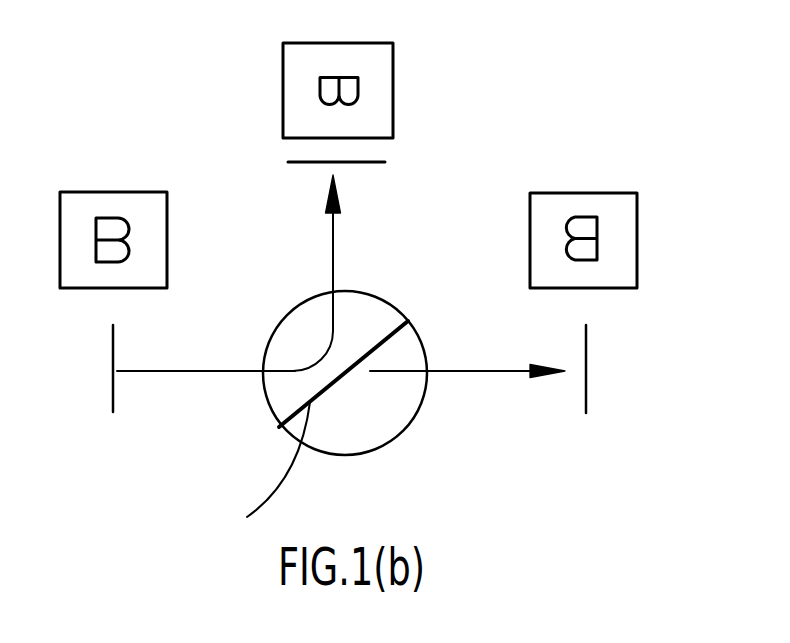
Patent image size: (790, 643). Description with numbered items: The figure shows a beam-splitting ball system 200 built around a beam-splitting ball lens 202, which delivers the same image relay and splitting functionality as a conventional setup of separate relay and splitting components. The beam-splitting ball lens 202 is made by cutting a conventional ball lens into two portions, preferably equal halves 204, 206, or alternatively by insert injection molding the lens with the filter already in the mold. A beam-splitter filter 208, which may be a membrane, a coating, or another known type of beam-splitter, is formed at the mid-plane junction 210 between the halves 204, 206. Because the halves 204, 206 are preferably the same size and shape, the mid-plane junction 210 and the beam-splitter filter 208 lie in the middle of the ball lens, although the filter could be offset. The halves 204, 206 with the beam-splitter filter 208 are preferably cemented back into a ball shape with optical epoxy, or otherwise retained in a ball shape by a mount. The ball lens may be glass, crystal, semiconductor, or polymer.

The beam-splitting ball system 200 is at (472, 122).
The beam-splitting ball lens 202 is at (335, 357).
The half of the ball lens 204 is at (288, 312).
The half of the ball lens 206 is at (398, 438).
The beam-splitter filter 208 is at (249, 470).
The mid-plane junction 210 is at (260, 438).